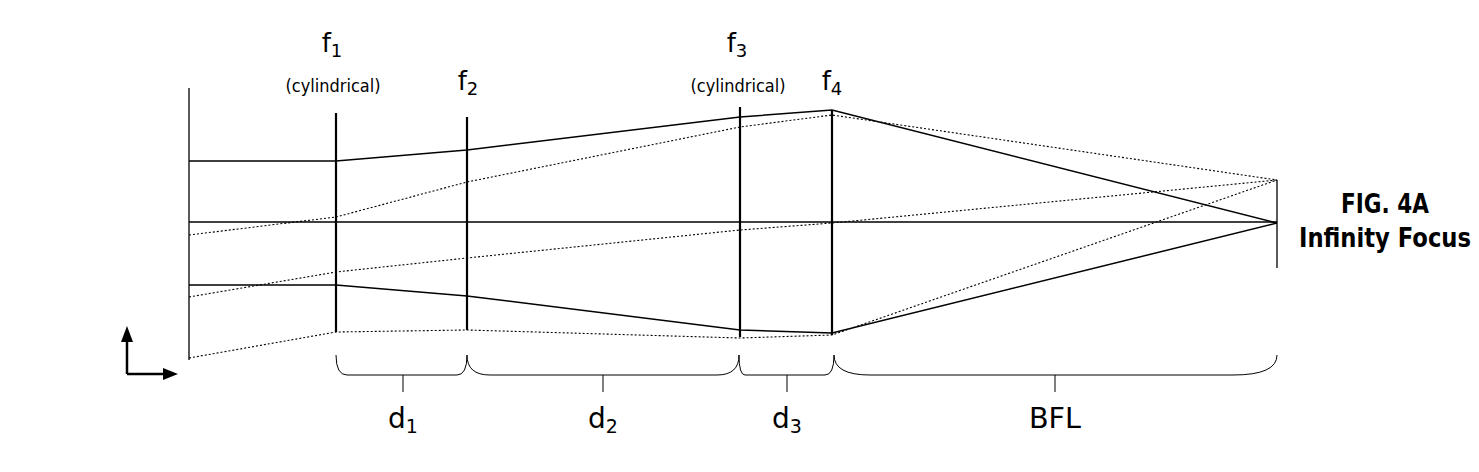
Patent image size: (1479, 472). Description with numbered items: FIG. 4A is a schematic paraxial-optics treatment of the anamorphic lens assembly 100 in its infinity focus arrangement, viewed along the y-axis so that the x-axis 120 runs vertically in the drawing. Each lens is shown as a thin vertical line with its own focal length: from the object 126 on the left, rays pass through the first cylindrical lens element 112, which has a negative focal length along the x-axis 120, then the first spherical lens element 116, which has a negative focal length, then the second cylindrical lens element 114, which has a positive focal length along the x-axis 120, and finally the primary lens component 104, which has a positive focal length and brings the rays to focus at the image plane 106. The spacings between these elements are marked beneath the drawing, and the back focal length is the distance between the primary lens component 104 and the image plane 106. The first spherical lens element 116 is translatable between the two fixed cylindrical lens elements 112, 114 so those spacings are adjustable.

The anamorphic lens assembly 100 is at (1290, 114).
The primary lens component 104 is at (832, 233).
The image plane 106 is at (1277, 253).
The first cylindrical lens element 112 is at (336, 292).
The second cylindrical lens element 114 is at (740, 250).
The first spherical lens element 116 is at (467, 262).
The x-axis 120 is at (127, 362).
The object 126 is at (189, 113).